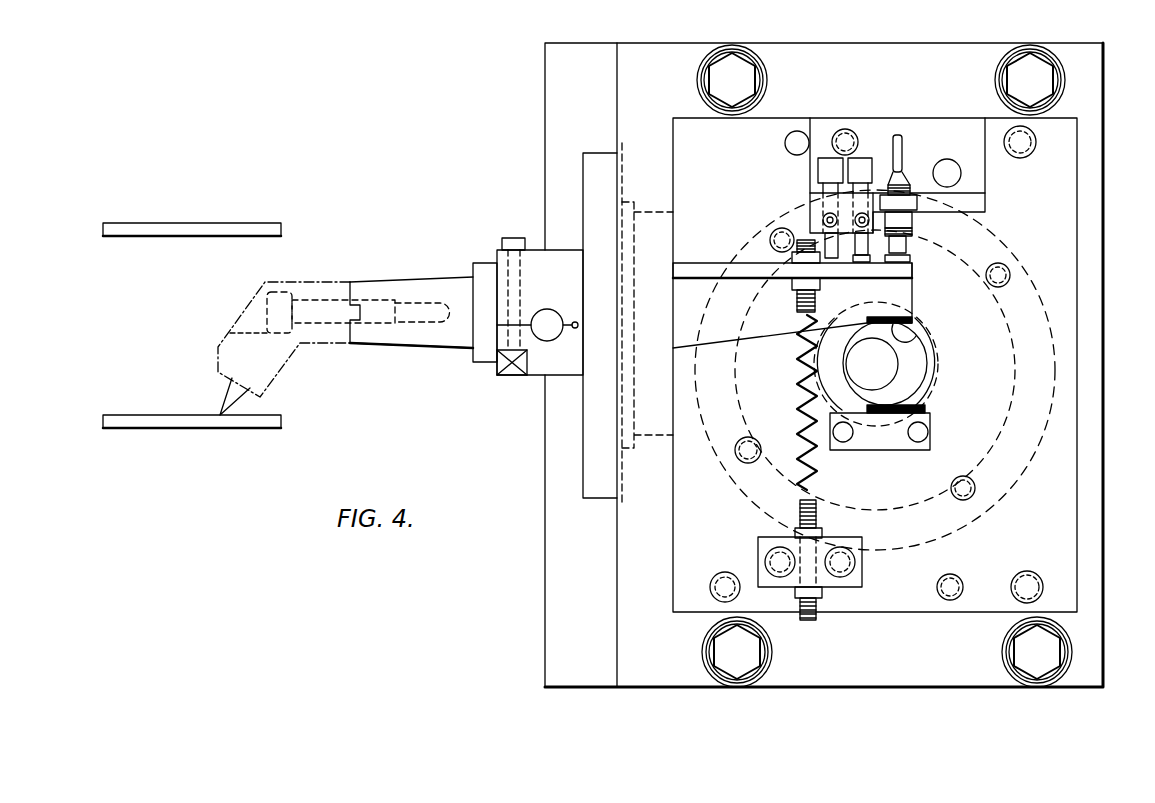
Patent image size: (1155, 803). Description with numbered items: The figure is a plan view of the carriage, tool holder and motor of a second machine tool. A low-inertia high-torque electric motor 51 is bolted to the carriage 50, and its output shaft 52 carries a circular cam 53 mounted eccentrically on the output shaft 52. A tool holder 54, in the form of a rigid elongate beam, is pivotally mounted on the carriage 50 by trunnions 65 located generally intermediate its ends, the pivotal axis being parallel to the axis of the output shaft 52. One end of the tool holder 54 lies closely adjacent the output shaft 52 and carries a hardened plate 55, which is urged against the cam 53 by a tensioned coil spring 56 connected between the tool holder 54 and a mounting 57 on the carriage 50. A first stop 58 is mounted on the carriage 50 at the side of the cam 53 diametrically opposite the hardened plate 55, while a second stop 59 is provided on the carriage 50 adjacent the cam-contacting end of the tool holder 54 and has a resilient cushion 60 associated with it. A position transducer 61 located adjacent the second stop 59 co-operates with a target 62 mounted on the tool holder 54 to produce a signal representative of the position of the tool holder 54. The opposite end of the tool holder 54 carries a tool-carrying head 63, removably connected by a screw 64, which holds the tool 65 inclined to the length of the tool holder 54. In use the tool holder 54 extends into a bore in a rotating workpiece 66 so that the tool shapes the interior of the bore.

The carriage 50 is at (1090, 162).
The electric motor 51 is at (1052, 352).
The output shaft 52 is at (884, 368).
The circular cam 53 is at (915, 357).
The tool holder 54 is at (433, 283).
The hardened plate 55 is at (905, 335).
The coil spring 56 is at (800, 412).
The mounting 57 is at (850, 575).
The first stop 58 is at (920, 408).
The second stop 59 is at (912, 282).
The resilient cushion 60 is at (828, 255).
The position transducer 61 is at (905, 242).
The target 62 is at (908, 258).
The tool-carrying head 63 is at (305, 290).
The screw 64 is at (368, 303).
The trunnions / tool 65 is at (545, 309).
The workpiece 66 is at (206, 420).